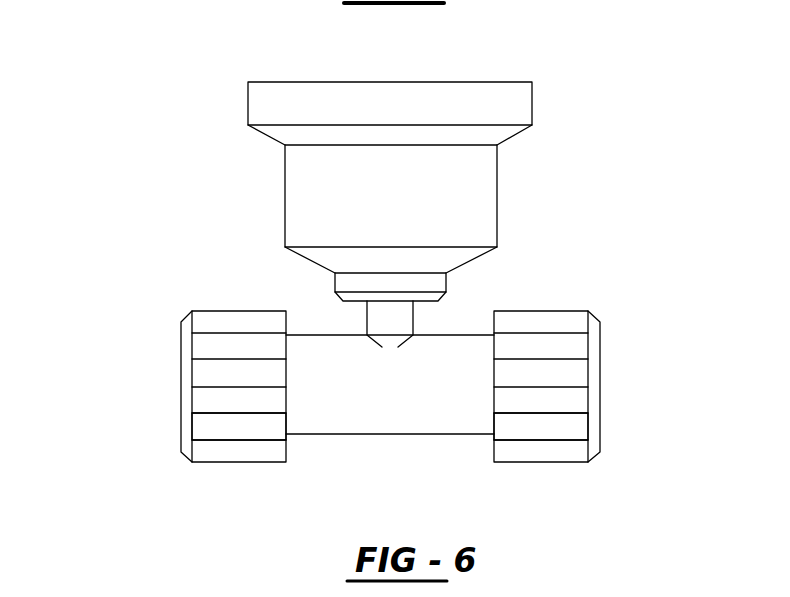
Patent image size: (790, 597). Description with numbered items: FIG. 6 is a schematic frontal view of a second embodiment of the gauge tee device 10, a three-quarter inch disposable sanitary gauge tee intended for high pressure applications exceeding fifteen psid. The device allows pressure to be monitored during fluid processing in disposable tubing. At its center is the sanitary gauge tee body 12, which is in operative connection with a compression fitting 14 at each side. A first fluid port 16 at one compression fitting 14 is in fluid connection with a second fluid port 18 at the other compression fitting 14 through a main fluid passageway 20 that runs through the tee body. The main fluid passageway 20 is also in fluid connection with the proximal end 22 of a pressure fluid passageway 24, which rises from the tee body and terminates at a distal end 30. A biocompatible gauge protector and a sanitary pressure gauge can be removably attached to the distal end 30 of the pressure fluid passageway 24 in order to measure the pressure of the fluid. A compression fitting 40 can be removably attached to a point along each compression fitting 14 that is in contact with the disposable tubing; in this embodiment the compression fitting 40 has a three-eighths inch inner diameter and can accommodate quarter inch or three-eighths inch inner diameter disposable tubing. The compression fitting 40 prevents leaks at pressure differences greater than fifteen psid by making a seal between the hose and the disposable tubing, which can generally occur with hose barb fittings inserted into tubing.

The gauge tee device 10 is at (594, 77).
The sanitary gauge tee body 12 is at (500, 182).
The compression fittings 14 is at (179, 393).
The first fluid port 16 is at (178, 358).
The second fluid port 18 is at (604, 365).
The main fluid passageway 20 is at (606, 390).
The proximal end 22 is at (417, 334).
The pressure fluid passageway 24 is at (308, 81).
The distal end 30 is at (246, 82).
The compression fitting 40 is at (243, 420).